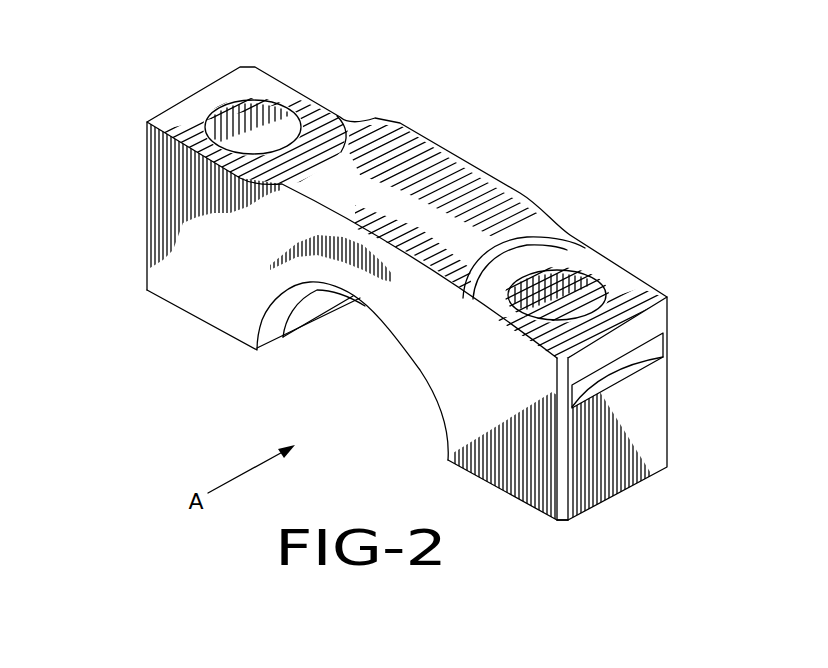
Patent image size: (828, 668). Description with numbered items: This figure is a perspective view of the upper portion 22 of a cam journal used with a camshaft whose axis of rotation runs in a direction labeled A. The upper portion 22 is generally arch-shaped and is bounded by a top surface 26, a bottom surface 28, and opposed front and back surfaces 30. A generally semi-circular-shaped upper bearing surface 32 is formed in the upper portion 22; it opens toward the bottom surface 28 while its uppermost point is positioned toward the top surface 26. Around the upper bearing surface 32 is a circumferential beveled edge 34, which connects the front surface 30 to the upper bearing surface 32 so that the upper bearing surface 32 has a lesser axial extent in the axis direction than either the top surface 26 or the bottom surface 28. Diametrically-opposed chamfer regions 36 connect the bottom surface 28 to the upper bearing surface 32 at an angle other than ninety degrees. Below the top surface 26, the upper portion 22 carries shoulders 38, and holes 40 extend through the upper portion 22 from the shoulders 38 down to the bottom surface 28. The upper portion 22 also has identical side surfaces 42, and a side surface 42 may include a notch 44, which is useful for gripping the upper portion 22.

The upper portion 22 is at (183, 185).
The top surface 26 is at (428, 167).
The bottom surface 28 is at (520, 502).
The front and back surfaces 30 is at (190, 270).
The upper bearing surface 32 is at (306, 303).
The circumferential beveled edge 34 is at (270, 322).
The chamfer regions 36 is at (287, 332).
The shoulders 38 is at (262, 88).
The holes 40 is at (233, 120).
The side surfaces 42 is at (632, 443).
The notch 44 is at (610, 370).